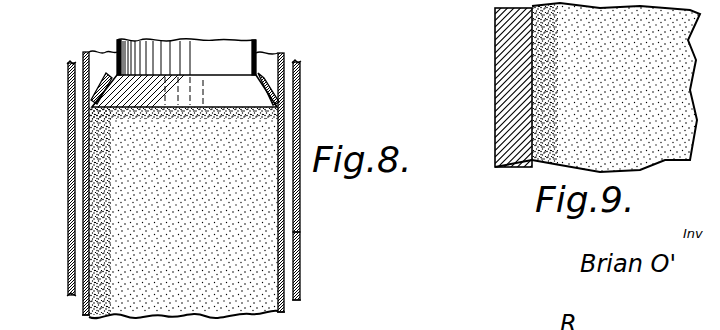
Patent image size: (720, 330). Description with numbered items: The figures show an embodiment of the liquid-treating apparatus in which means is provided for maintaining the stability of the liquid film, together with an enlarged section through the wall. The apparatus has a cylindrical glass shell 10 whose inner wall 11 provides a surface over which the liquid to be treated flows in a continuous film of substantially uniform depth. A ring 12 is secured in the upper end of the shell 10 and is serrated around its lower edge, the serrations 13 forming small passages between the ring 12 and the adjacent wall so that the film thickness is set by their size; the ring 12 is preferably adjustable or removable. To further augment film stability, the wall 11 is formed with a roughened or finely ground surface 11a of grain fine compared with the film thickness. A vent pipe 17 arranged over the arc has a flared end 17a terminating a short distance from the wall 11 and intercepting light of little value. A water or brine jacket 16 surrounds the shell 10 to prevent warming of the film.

In FIG. 8, the cylindrical glass shell 10 is at (86, 153).
In FIG. 8, the inner wall 11 is at (278, 178).
In FIG. 9, the inner wall 11 is at (500, 85).
In FIG. 8, the roughened or finely ground surface 11a is at (115, 207).
In FIG. 9, the roughened or finely ground surface 11a is at (535, 50).
In FIG. 8, the ring 12 is at (97, 80).
In FIG. 8, the serrations 13 is at (276, 107).
In FIG. 8, the water or brine jacket 16 is at (300, 248).
In FIG. 8, the vent pipe 17 is at (205, 40).
In FIG. 8, the flared end 17a is at (197, 98).